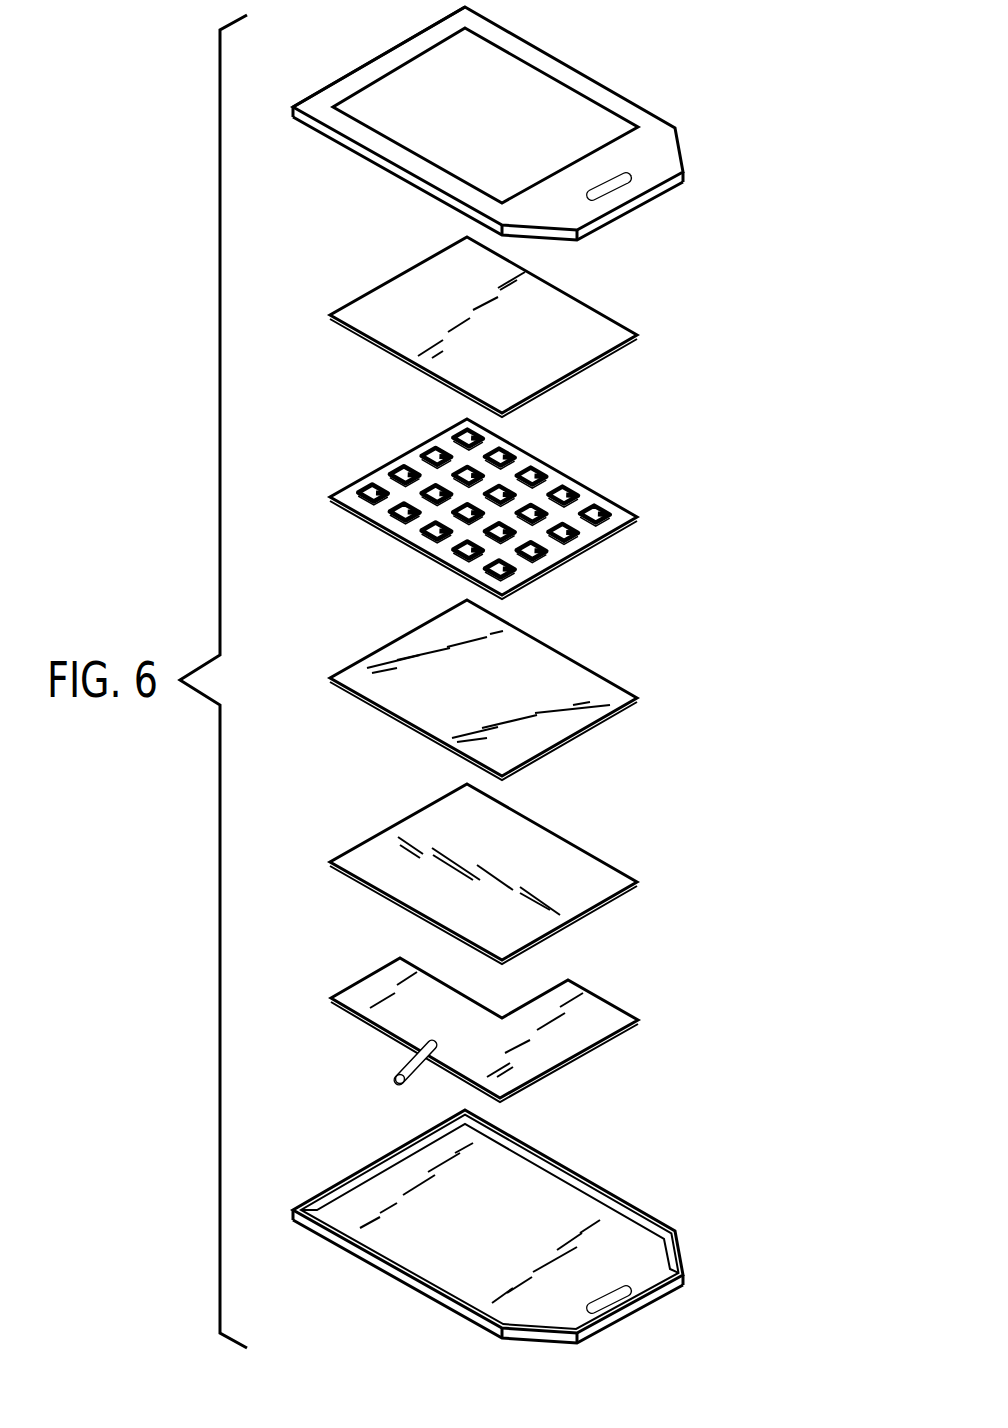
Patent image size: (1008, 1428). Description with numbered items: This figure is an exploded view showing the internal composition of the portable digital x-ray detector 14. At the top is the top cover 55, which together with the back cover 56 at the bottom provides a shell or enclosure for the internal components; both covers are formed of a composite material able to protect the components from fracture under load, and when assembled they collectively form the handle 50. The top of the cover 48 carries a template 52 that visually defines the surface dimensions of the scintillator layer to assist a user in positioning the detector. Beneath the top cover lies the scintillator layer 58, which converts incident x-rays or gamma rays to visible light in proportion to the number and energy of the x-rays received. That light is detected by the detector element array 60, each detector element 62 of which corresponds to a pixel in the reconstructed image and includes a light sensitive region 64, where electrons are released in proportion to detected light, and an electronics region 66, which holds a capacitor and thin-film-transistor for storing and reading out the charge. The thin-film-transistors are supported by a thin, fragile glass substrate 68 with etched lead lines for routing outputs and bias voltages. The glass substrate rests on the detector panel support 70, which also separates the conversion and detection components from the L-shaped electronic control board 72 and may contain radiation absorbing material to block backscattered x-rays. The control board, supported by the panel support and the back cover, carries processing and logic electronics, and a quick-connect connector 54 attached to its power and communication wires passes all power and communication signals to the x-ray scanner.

The detector 14 is at (823, 170).
The cover 48 is at (660, 153).
The handle 50 is at (626, 181).
The template 52 is at (528, 94).
The quick-connect connector 54 is at (406, 1068).
The top cover 55 is at (336, 87).
The back cover 56 is at (368, 1165).
The scintillator layer 58 is at (378, 298).
The detector element array 60 is at (454, 488).
The detector element 62 is at (408, 443).
The light sensitive region 64 is at (436, 452).
The electronics region 66 is at (405, 470).
The glass substrate 68 is at (382, 649).
The detector panel support 70 is at (386, 826).
The electronic control board 72 is at (352, 984).